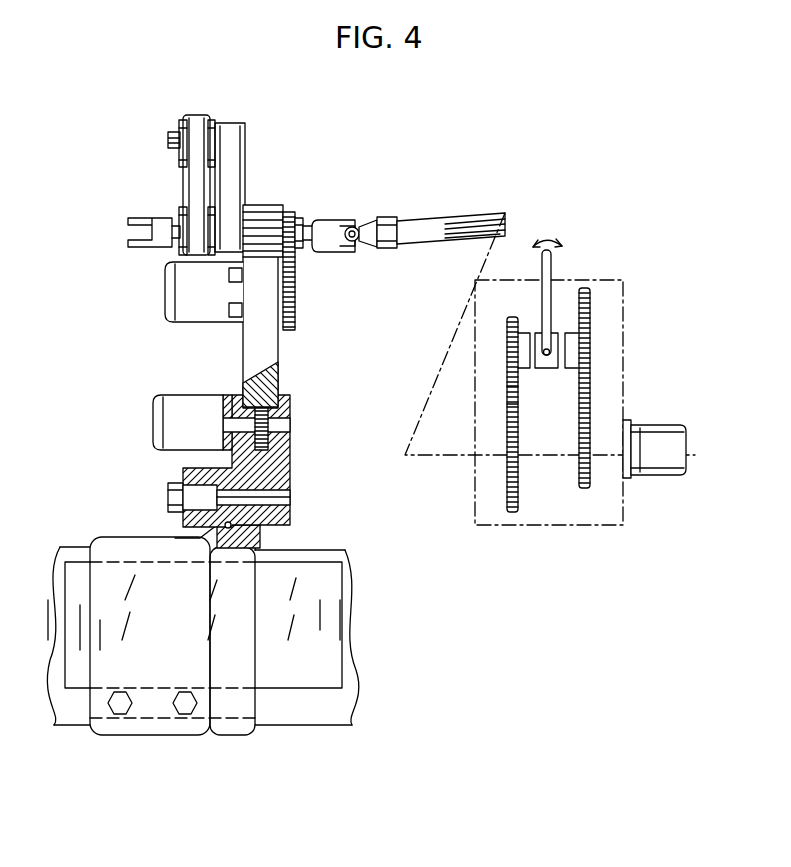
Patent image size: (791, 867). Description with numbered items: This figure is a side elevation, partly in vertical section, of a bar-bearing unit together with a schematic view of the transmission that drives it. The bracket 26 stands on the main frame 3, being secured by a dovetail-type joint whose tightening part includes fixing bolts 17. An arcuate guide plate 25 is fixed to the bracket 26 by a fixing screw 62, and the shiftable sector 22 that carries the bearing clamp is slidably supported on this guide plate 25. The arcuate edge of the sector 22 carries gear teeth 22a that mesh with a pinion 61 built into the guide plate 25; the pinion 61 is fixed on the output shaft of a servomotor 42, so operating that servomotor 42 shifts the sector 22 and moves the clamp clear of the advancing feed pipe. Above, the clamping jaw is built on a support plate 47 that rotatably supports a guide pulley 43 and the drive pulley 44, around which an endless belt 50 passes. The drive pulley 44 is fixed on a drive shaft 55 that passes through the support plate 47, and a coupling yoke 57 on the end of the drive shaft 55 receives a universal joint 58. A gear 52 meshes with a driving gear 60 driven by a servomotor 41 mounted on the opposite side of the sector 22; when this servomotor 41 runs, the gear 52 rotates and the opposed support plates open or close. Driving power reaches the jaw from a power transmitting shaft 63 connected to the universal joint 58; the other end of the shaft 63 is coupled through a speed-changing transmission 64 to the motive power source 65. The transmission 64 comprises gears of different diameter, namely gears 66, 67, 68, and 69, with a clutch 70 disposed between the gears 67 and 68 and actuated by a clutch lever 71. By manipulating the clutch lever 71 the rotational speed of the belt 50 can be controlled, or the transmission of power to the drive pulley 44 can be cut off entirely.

The main frame 3 is at (345, 557).
The fixing bolts 17 is at (185, 716).
The shiftable sector 22 is at (265, 345).
The gear teeth 22a is at (288, 398).
The arcuate guide plate 25 is at (268, 462).
The bracket 26 is at (143, 540).
The servomotor 41 is at (173, 300).
The servomotor 42 is at (165, 417).
The guide pulley 43 is at (180, 125).
The drive pulley 44 is at (180, 215).
The support plate 47 is at (227, 162).
The endless belt 50 is at (195, 185).
The gear 52 is at (298, 248).
The drive shaft 55 is at (313, 227).
The coupling yoke 57 is at (333, 227).
The universal joint 58 is at (377, 220).
The driving gear 60 is at (287, 292).
The pinion 61 is at (268, 421).
The fixing screw 62 is at (282, 498).
The power transmitting shaft 63 is at (428, 230).
The transmission 64 is at (617, 277).
The motive power source 65 is at (660, 473).
The gear 66 is at (588, 424).
The gear 67 is at (592, 318).
The gear 68 is at (508, 338).
The gear 69 is at (505, 455).
The clutch 70 is at (545, 372).
The clutch lever 71 is at (548, 253).